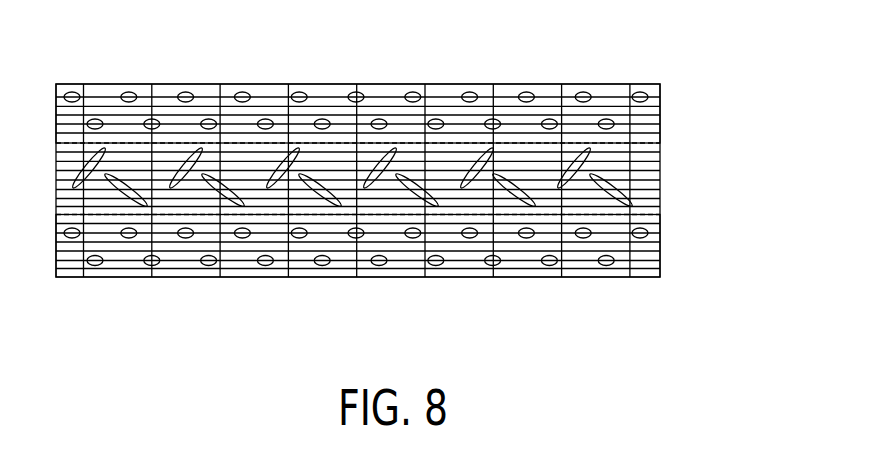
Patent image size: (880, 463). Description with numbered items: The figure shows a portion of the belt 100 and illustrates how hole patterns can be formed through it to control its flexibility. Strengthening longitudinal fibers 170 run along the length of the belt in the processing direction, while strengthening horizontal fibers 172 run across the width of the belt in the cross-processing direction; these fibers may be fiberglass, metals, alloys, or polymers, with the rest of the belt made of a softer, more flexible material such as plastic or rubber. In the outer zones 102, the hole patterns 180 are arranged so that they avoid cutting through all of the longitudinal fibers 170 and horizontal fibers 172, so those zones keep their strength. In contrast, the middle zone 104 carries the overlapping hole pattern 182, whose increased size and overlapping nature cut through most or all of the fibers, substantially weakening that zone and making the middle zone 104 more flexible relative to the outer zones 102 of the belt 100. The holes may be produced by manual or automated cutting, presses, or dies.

The belt 100 is at (330, 84).
The outer zones 102 is at (688, 113).
The middle zone 104 is at (688, 195).
The longitudinal fibers 170 is at (573, 128).
The horizontal fibers 172 is at (632, 250).
The hole patterns 180 is at (128, 90).
The overlapping hole pattern 182 is at (232, 198).